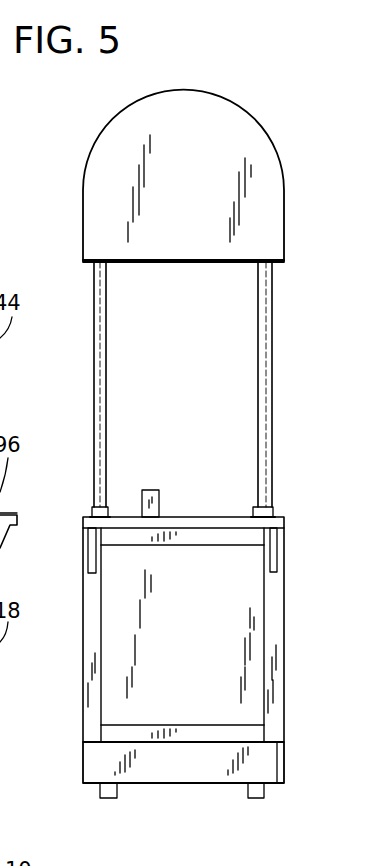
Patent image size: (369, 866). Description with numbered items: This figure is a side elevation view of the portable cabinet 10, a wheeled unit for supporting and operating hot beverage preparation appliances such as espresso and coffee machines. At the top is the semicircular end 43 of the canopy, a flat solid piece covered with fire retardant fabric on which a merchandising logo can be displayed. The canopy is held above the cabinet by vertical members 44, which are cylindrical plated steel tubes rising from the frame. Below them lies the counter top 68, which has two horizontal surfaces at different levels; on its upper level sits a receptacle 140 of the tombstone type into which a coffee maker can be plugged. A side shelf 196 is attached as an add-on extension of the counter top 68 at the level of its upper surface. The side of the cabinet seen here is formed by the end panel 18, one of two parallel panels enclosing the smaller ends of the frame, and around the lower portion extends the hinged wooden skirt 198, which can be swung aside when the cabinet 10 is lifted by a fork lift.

The portable cabinet 10 is at (0, 143).
The semicircular end of canopy 43 is at (202, 182).
The vertical members 44 is at (107, 312).
The receptacle 140 is at (155, 490).
The counter top 68 is at (197, 503).
The side shelf 196 is at (203, 523).
The end panel 18 is at (196, 652).
The skirt 198 is at (200, 763).